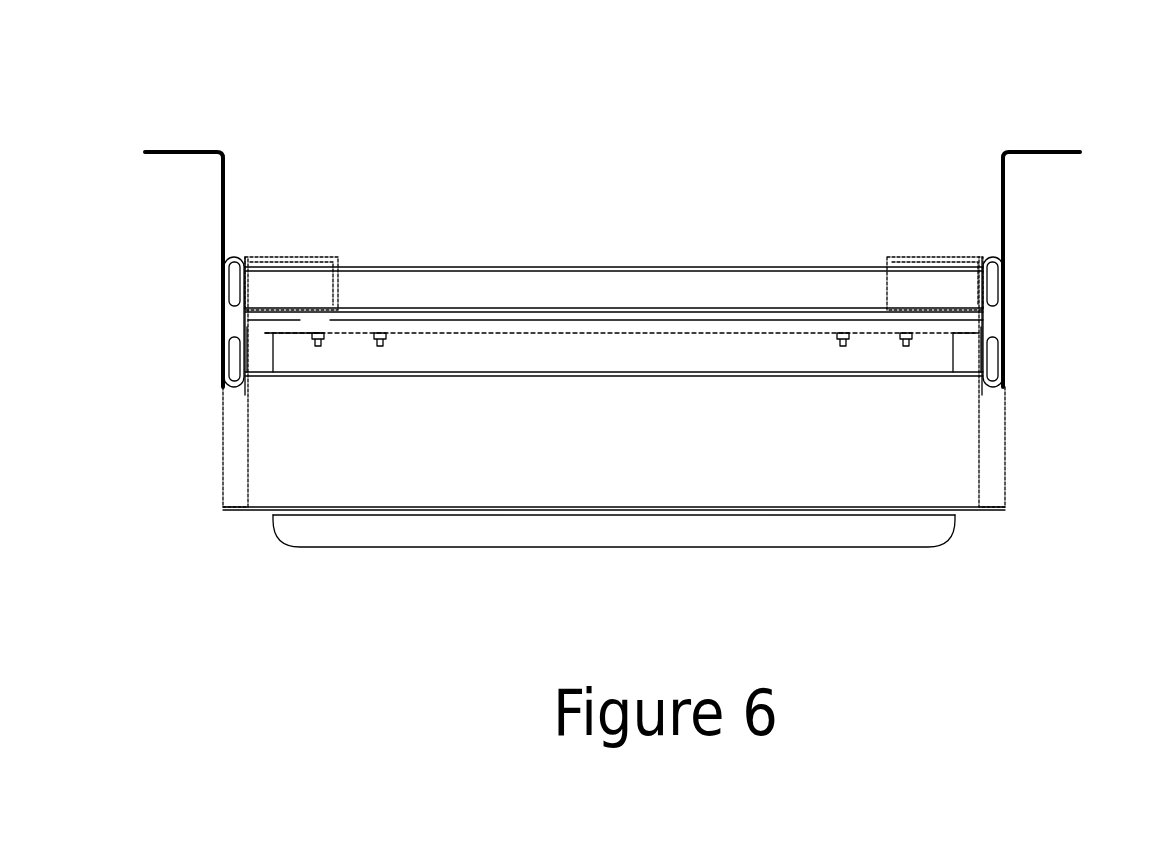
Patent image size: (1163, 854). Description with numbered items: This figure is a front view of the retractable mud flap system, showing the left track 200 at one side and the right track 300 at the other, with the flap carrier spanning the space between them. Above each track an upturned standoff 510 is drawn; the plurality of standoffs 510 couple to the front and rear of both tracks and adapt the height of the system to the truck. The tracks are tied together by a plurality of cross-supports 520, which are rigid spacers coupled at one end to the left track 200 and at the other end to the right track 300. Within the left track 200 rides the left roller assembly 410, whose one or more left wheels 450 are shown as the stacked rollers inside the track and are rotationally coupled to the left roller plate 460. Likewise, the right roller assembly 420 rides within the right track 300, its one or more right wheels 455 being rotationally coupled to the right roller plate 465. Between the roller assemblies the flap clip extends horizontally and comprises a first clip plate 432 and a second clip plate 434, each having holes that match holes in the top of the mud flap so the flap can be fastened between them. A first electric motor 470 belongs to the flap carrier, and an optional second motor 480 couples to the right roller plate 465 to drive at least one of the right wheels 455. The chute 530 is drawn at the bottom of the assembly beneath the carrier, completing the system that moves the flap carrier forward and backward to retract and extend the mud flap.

The standoff 510 is at (188, 150).
The right track 300 is at (223, 385).
The left track 200 is at (1005, 377).
The right wheel 455 is at (234, 368).
The left wheel 450 is at (1005, 285).
The cross-support 520 is at (657, 268).
The first clip plate 432 is at (470, 310).
The second clip plate 434 is at (468, 335).
The right roller assembly 420 is at (340, 240).
The left roller assembly 410 is at (1000, 245).
The second motor 480 is at (293, 283).
The first electric motor 470 is at (920, 293).
The right roller plate 465 is at (247, 327).
The left roller plate 460 is at (983, 380).
The chute 530 is at (553, 467).